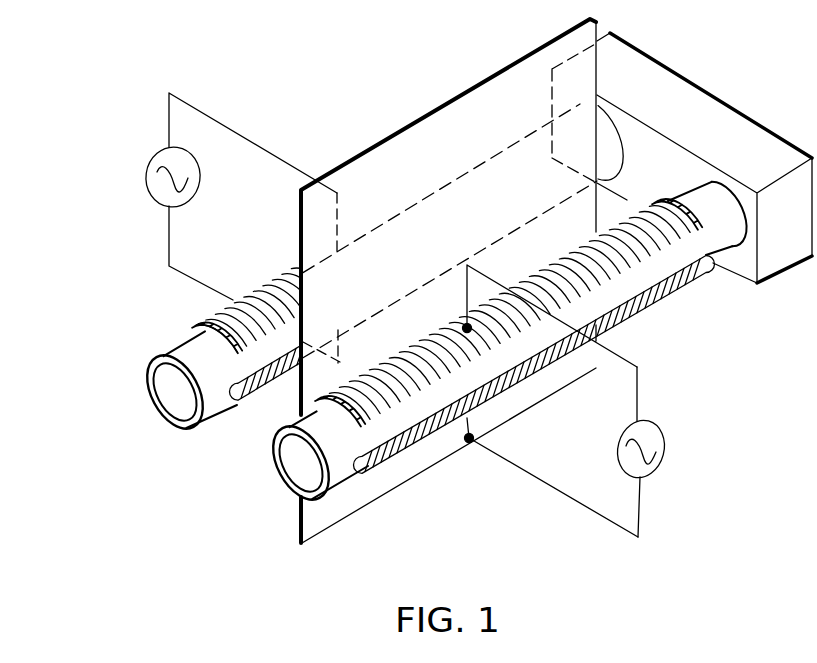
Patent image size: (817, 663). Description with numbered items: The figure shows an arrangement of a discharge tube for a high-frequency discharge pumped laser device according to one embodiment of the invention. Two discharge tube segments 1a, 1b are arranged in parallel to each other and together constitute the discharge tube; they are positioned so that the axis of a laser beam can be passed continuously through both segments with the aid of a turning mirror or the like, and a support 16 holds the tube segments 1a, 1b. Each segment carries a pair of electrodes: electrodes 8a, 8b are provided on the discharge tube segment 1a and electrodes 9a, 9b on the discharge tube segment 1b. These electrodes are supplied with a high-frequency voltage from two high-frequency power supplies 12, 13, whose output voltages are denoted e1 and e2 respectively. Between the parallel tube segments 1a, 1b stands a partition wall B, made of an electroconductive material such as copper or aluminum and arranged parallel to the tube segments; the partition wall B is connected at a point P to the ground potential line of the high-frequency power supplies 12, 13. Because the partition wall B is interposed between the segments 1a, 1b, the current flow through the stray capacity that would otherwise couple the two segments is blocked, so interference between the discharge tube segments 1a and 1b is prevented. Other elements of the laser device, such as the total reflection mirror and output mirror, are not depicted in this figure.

The discharge tube segment 1a is at (163, 350).
The discharge tube segment 1b is at (284, 488).
The electrode 8a is at (217, 305).
The electrode 8b is at (246, 405).
The electrode 9a is at (708, 268).
The electrode 9b is at (393, 467).
The high-frequency power supply 12 is at (161, 149).
The high-frequency power supply 13 is at (665, 443).
The support 16 is at (720, 97).
The partition wall B is at (408, 125).
The point P is at (407, 452).
The voltage e1 is at (140, 167).
The voltage e2 is at (670, 476).